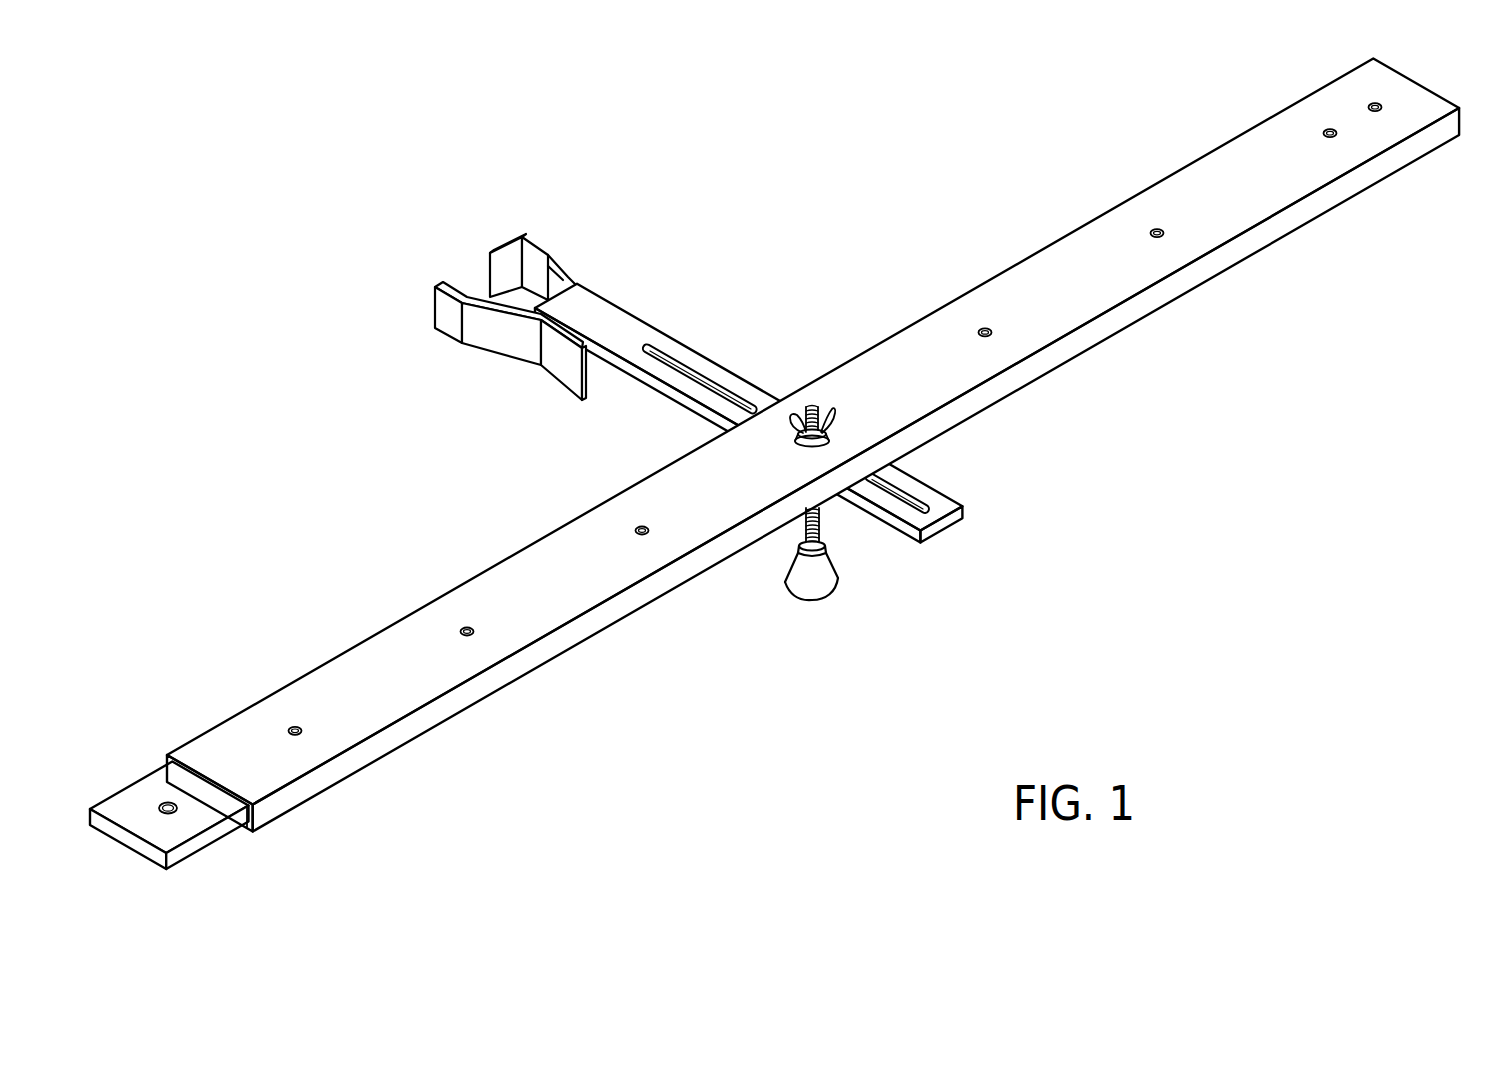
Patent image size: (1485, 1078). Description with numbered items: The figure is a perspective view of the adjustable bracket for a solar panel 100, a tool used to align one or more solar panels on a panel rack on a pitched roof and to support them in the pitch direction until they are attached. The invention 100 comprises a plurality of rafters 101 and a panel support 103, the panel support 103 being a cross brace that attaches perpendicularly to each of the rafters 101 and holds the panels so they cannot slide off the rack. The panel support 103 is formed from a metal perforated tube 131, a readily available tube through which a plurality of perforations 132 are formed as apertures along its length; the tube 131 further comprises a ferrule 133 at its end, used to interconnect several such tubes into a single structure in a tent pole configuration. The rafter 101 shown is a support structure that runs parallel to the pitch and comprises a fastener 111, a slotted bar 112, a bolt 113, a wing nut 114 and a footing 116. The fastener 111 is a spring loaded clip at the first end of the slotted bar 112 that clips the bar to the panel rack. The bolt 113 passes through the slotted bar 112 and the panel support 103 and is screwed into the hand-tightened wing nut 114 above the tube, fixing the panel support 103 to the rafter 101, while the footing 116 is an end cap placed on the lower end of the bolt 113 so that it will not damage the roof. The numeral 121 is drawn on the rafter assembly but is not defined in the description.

The adjustable bracket for a solar panel 100 is at (324, 122).
The rafter 101 is at (657, 320).
The panel support 103 is at (505, 685).
The fastener 111 is at (528, 238).
The slotted bar 112 is at (717, 360).
The bolt 113 is at (803, 512).
The wing nut 114 is at (837, 408).
The footing 116 is at (828, 573).
The cross rail plate 121 is at (582, 297).
The metal perforated tube 131 is at (503, 592).
The perforation 132 is at (985, 330).
The ferrule 133 is at (202, 842).